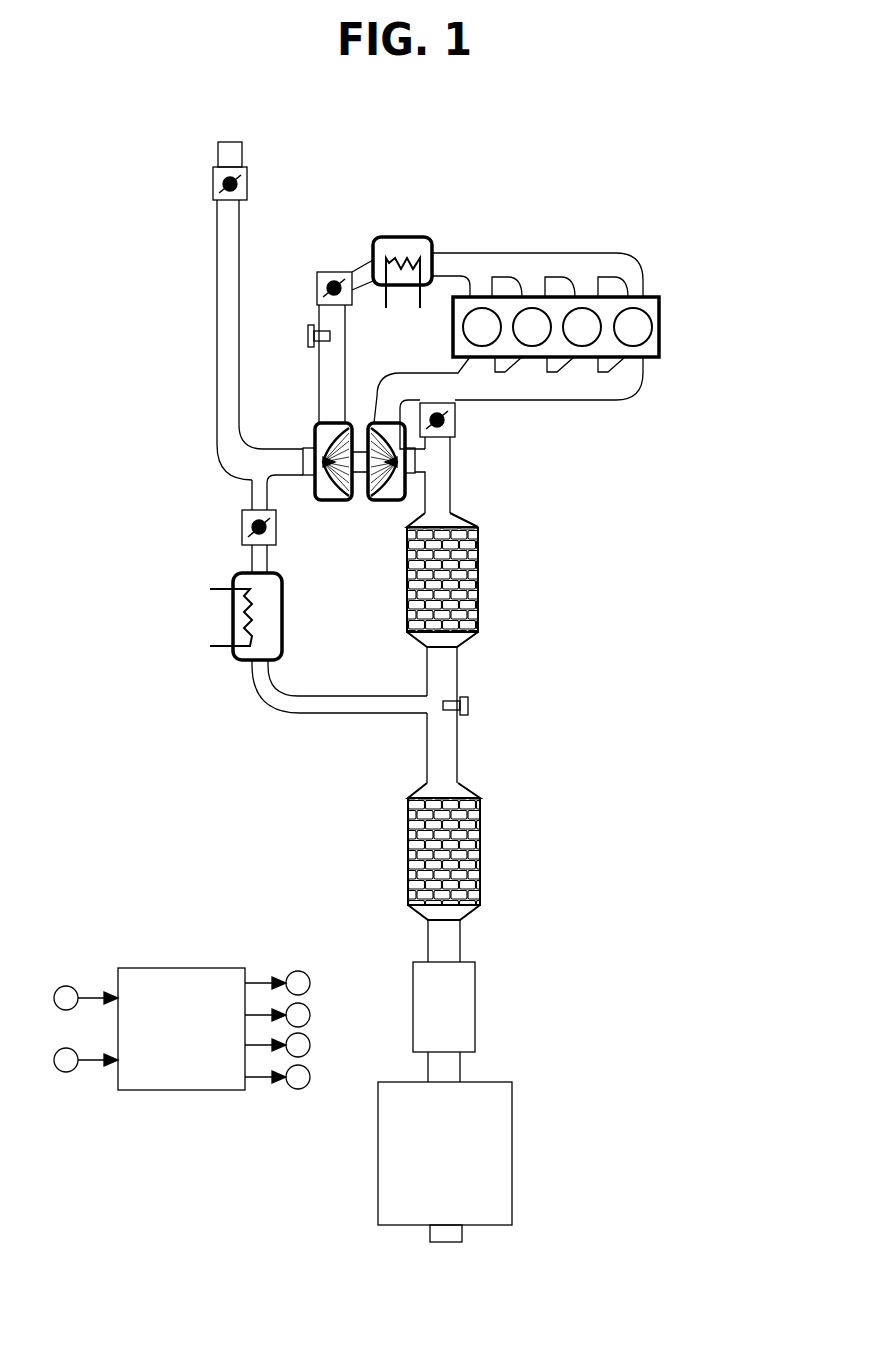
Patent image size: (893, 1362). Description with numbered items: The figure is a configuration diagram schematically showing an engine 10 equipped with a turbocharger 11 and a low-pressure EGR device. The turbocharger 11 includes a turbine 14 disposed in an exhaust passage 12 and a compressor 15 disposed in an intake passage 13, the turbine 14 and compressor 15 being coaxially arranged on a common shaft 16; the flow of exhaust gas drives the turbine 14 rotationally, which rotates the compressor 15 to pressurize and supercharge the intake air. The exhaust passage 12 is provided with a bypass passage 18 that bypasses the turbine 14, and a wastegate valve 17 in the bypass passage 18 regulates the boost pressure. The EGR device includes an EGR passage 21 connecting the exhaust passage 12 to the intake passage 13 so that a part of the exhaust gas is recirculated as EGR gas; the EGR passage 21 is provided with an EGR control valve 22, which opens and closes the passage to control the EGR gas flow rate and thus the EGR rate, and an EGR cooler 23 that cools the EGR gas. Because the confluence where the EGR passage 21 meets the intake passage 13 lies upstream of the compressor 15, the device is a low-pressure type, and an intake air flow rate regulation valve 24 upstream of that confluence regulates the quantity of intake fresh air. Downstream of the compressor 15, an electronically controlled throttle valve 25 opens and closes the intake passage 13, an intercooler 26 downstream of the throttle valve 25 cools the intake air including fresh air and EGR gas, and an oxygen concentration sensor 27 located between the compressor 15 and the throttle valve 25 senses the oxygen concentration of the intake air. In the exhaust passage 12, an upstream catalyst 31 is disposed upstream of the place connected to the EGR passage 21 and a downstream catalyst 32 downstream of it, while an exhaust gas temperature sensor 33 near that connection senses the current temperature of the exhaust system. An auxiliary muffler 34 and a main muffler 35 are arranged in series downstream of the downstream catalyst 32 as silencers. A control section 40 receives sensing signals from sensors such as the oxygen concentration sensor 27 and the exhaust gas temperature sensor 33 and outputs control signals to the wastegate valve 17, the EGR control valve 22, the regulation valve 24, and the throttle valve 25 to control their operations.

The engine 10 is at (665, 316).
The turbocharger 11 is at (338, 468).
The exhaust passage 12 is at (458, 750).
The intake passage 13 is at (217, 305).
The turbine 14 is at (410, 483).
The compressor 15 is at (318, 425).
The shaft 16 is at (357, 438).
The wastegate valve 17 is at (457, 423).
The bypass passage 18 is at (443, 442).
The EGR passage 21 is at (318, 716).
The EGR control valve 22 is at (242, 527).
The EGR cooler 23 is at (245, 660).
The intake air flow rate regulation valve 24 is at (213, 183).
The throttle valve 25 is at (320, 272).
The intercooler 26 is at (400, 237).
The oxygen concentration sensor 27 is at (308, 332).
The upstream catalyst 31 is at (478, 585).
The downstream catalyst 32 is at (480, 845).
The exhaust gas temperature sensor 33 is at (468, 706).
The auxiliary muffler 34 is at (475, 1004).
The main muffler 35 is at (512, 1143).
The control section 40 is at (175, 967).